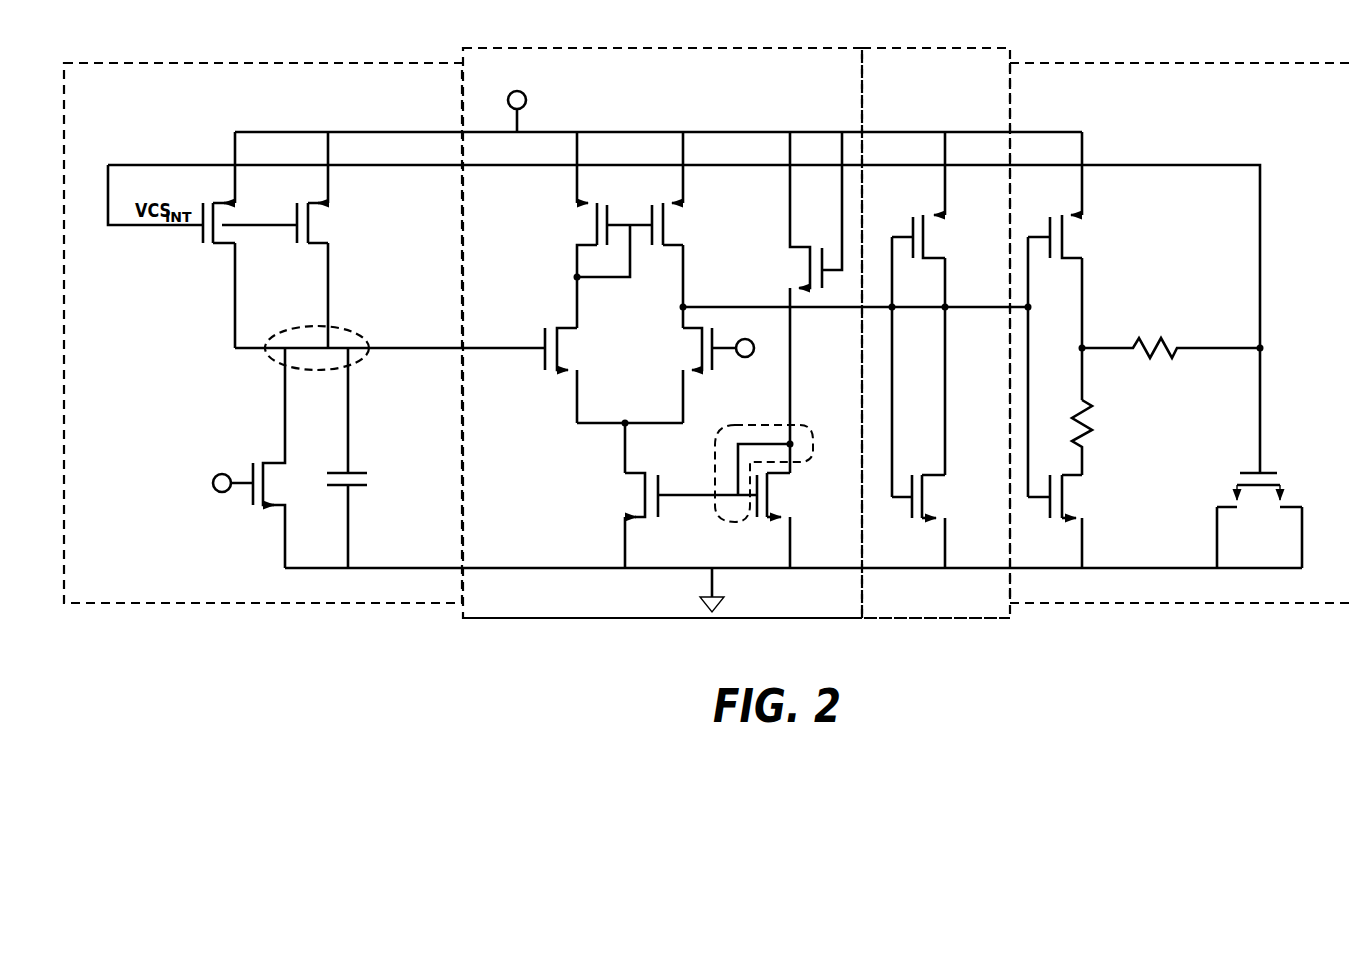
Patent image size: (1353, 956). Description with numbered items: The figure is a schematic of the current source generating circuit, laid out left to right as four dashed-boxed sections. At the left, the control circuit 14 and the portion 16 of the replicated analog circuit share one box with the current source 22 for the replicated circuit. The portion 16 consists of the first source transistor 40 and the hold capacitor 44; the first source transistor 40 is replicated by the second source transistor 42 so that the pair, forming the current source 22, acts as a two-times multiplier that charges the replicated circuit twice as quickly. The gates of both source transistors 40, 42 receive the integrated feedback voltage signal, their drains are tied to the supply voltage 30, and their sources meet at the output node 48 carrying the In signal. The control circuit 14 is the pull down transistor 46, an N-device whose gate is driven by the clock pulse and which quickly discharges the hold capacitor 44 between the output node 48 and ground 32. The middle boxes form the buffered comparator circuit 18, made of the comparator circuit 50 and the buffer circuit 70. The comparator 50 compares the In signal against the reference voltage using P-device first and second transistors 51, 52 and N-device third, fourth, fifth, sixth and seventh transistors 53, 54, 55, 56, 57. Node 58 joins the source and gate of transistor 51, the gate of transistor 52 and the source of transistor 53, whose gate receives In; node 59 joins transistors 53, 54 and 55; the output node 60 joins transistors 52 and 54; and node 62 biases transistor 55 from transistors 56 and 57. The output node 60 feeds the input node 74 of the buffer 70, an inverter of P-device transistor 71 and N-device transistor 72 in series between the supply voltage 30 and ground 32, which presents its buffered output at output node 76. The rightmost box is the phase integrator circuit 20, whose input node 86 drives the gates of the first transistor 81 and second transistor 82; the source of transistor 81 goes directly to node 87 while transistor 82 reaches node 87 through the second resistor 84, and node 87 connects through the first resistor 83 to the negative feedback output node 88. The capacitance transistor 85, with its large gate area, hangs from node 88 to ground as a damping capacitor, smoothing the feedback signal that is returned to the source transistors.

The control circuit 14 is at (180, 462).
The portion of the replicated analog circuit 16 is at (352, 465).
The buffered comparator circuit 18 is at (840, 620).
The phase integrator circuit 20 is at (1175, 605).
The current source for the replicated circuit 22 is at (293, 233).
The VDD 30 is at (525, 92).
The ground 32 is at (722, 600).
The first source transistor (M3) 40 is at (217, 248).
The second source transistor (M4) 42 is at (322, 245).
The hold capacitor (CH) 44 is at (362, 472).
The pull down transistor 46 is at (278, 505).
The output node 48 is at (338, 327).
The comparator circuit 50 is at (810, 118).
The first transistor 51 is at (608, 213).
The second transistor 52 is at (673, 205).
The third transistor 53 is at (570, 334).
The fourth transistor 54 is at (690, 372).
The fifth transistor 55 is at (660, 487).
The sixth transistor 56 is at (797, 289).
The seventh transistor 57 is at (782, 486).
The node 58 is at (575, 277).
The node 59 is at (625, 420).
The output node 60 is at (685, 305).
The node 62 is at (792, 442).
The buffer circuit 70 is at (985, 118).
The first transistor 71 is at (930, 213).
The second transistor 72 is at (932, 521).
The input node 74 is at (896, 312).
The output node 76 is at (948, 307).
The first transistor (M1) 81 is at (1070, 213).
The second transistor (M2) 82 is at (1073, 522).
The first resistor (R1) 83 is at (1160, 355).
The second resistor (R2) 84 is at (1075, 418).
The capacitance transistor 85 is at (1288, 498).
The input node 86 is at (1030, 307).
The node 87 is at (1085, 345).
The negative feedback output node 88 is at (1257, 345).